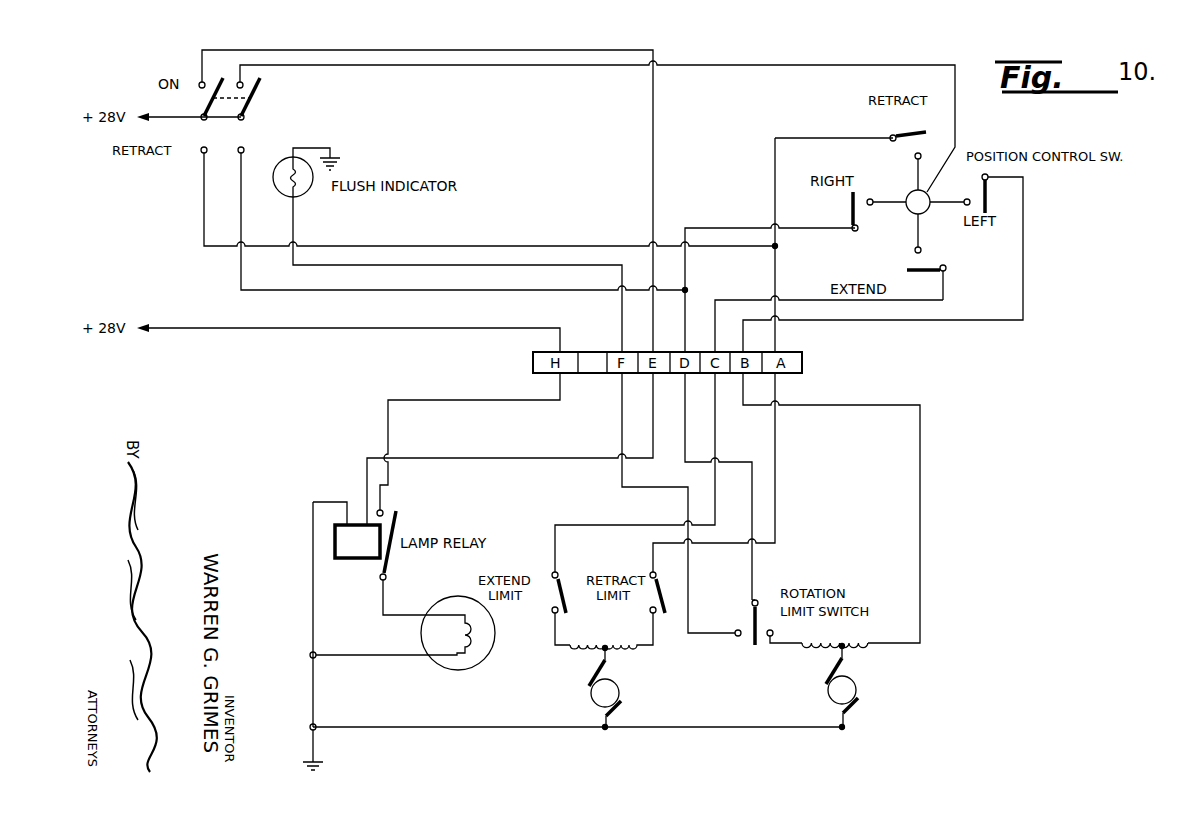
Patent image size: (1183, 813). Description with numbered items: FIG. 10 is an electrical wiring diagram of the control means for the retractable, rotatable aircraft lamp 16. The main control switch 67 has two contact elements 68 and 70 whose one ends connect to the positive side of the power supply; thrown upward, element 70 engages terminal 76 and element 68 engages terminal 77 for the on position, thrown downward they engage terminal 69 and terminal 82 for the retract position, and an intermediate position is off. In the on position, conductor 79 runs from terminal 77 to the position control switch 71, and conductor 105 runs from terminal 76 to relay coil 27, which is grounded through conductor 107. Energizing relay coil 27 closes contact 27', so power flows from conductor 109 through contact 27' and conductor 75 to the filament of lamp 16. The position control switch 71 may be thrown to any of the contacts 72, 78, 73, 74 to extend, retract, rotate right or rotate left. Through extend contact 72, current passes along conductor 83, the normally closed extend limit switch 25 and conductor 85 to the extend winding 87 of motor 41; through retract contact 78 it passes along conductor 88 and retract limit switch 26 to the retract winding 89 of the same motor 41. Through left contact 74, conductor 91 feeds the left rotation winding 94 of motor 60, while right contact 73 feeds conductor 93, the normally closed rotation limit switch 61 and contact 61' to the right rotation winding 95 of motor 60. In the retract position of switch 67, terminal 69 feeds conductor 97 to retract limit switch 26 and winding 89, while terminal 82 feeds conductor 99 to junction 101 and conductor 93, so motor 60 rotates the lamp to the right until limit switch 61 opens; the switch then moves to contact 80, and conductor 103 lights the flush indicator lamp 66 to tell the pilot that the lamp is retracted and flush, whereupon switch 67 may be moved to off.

The lamp 16 is at (462, 670).
The extend limit switch 25 is at (560, 575).
The retract limit switch 26 is at (658, 598).
The relay coil 27 is at (346, 549).
The relay contact 27' is at (468, 476).
The motor 41 is at (620, 686).
The rotation motor 60 is at (860, 684).
The rotation limit switch 61 is at (753, 638).
The contact 61' is at (784, 657).
The flush position indicator lamp 66 is at (303, 190).
The main control switch 67 is at (218, 122).
The contact element 68 is at (246, 99).
The terminal 69 is at (202, 154).
The contact element 70 is at (210, 98).
The position control switch 71 is at (910, 213).
The extend contact 72 is at (946, 287).
The right rotation contact 73 is at (851, 210).
The left rotation contact 74 is at (995, 202).
The conductor 75 is at (410, 618).
The terminal 76 is at (202, 82).
The terminal 77 is at (244, 82).
The retract contact 78 is at (898, 133).
The conductor 79 is at (704, 65).
The contact 80 is at (738, 629).
The terminal 82 is at (244, 151).
The conductor 83 is at (752, 300).
The conductor 85 is at (553, 638).
The extend winding 87 is at (582, 652).
The conductor 88 is at (775, 190).
The retract winding 89 is at (637, 648).
The conductor 91 is at (1024, 288).
The conductor 93 is at (685, 348).
The left rotation winding 94 is at (870, 645).
The right rotation winding 95 is at (832, 642).
The conductor 97 is at (468, 246).
The conductor 99 is at (425, 290).
The junction 101 is at (686, 290).
The conductor 103 is at (618, 487).
The conductor 105 is at (452, 52).
The conductor 107 is at (310, 625).
The conductor 109 is at (375, 328).